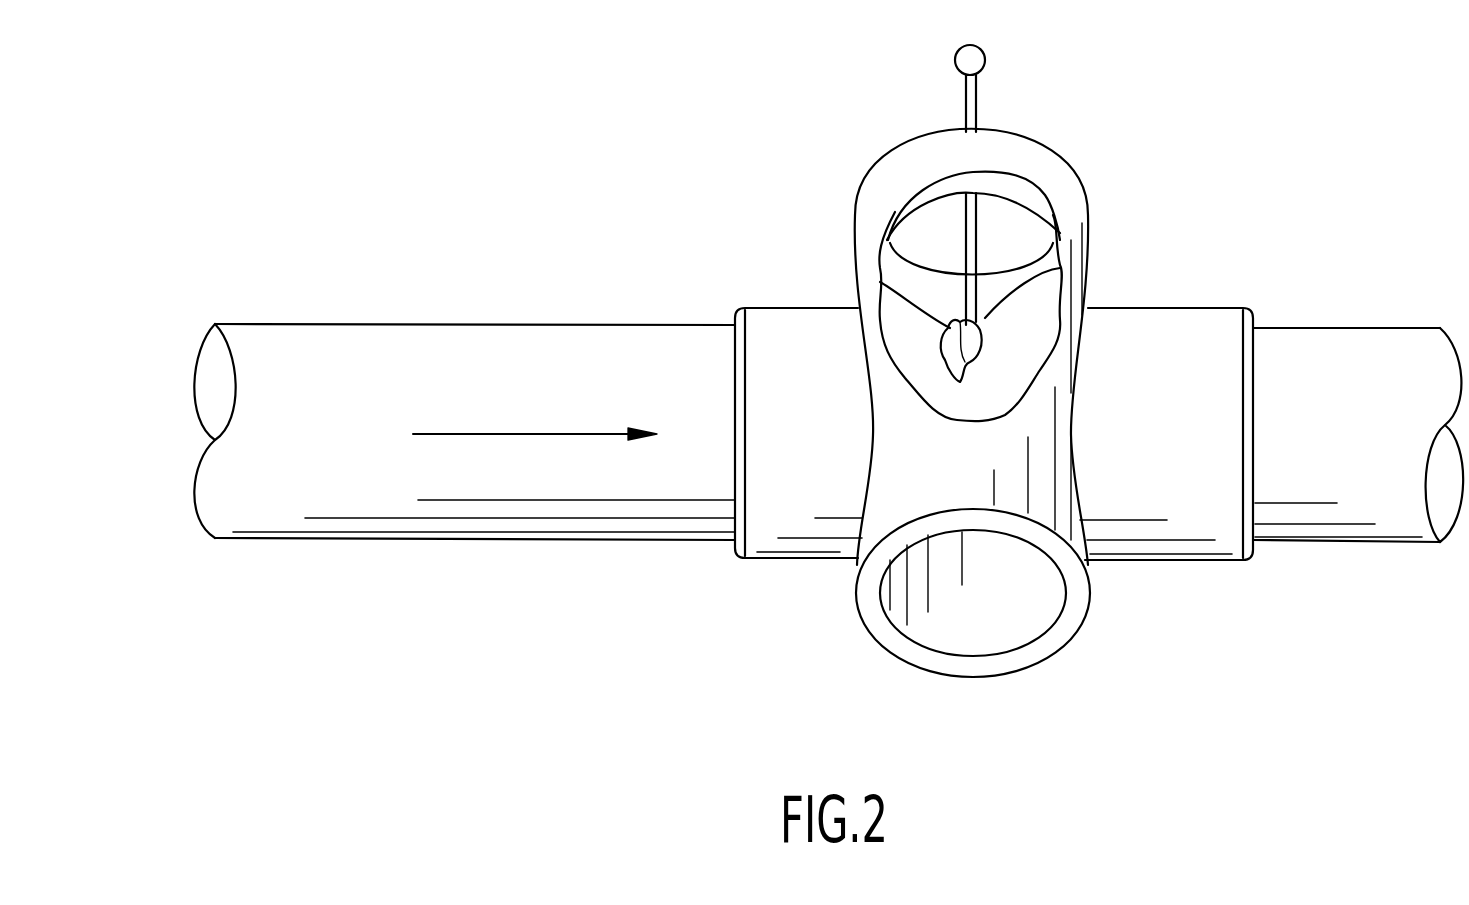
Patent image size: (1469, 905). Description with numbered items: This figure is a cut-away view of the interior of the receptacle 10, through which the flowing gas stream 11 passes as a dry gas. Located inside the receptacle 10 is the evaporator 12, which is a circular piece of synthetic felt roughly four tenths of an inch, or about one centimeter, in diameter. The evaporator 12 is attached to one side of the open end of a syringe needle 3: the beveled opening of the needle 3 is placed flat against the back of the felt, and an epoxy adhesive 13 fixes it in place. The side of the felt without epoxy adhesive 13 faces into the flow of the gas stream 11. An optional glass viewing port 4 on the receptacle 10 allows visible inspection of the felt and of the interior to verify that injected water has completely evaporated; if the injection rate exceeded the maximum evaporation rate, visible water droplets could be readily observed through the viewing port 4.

The needle 3 is at (978, 250).
The glass viewing port 4 is at (990, 677).
The receptacle 10 is at (572, 543).
The flowing gas stream 11 is at (520, 432).
The evaporator 12 is at (880, 282).
The epoxy adhesive 13 is at (1060, 268).